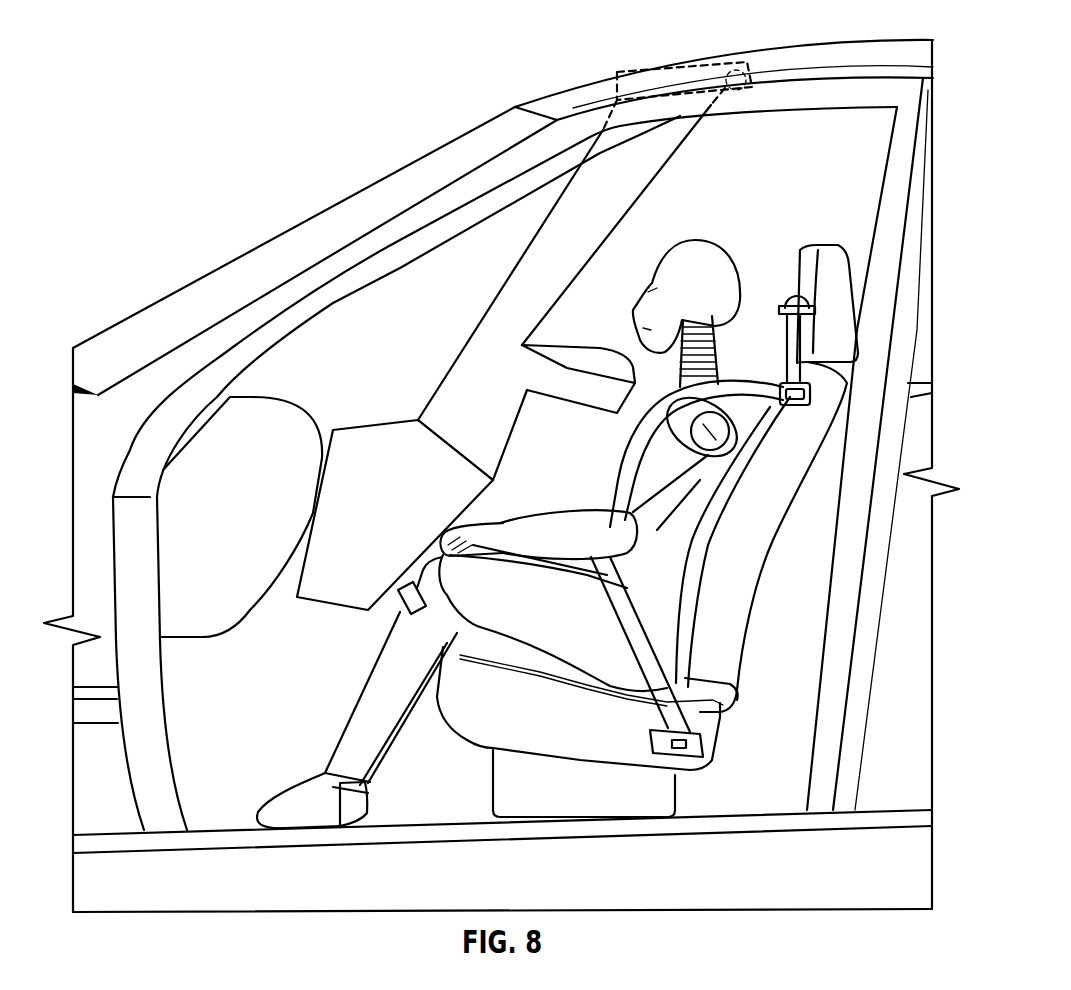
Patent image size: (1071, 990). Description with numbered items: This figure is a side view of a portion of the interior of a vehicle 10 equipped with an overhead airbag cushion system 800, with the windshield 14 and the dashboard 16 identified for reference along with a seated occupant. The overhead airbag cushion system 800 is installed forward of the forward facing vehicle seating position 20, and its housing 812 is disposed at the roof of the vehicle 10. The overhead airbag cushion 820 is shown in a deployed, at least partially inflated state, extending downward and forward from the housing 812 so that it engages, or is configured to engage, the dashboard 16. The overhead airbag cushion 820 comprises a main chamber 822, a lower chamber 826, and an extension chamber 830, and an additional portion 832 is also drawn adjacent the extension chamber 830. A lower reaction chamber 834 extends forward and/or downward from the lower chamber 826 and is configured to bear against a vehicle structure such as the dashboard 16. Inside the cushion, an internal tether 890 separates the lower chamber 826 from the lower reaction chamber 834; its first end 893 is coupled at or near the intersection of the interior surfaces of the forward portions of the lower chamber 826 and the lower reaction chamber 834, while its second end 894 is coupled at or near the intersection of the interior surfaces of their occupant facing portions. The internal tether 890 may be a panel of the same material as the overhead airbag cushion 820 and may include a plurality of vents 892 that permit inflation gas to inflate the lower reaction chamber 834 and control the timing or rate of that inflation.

The vehicle 10 is at (310, 96).
The windshield 14 is at (273, 267).
The dashboard 16 is at (258, 489).
The forward facing vehicle seating position 20 is at (828, 263).
The overhead airbag cushion system 800 is at (420, 310).
The housing 812 is at (620, 73).
The overhead airbag cushion 820 is at (504, 357).
The main chamber 822 is at (622, 209).
The lower chamber 826 is at (497, 396).
The extension chamber 830 is at (560, 400).
The fourth airbag portion 832 is at (630, 382).
The lower reaction chamber 834 is at (352, 447).
The internal tether 890 is at (435, 442).
The vents 892 is at (441, 458).
The first end 893 is at (418, 420).
The second end 894 is at (493, 480).